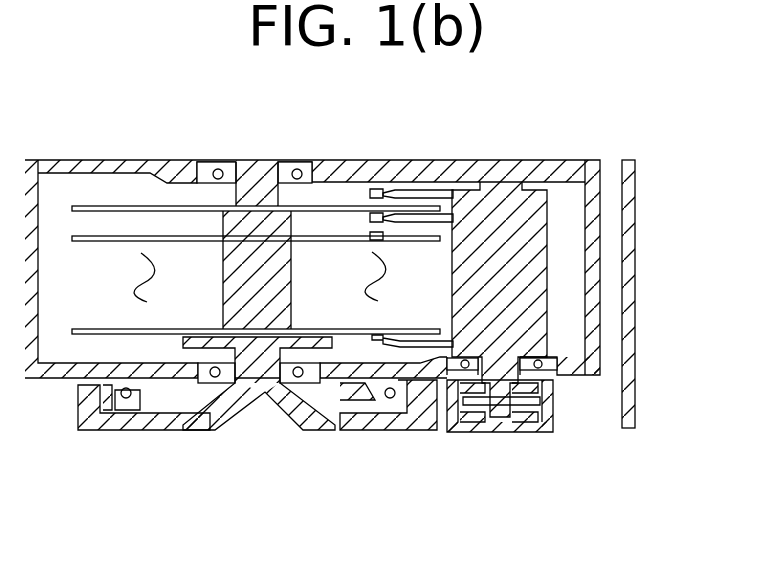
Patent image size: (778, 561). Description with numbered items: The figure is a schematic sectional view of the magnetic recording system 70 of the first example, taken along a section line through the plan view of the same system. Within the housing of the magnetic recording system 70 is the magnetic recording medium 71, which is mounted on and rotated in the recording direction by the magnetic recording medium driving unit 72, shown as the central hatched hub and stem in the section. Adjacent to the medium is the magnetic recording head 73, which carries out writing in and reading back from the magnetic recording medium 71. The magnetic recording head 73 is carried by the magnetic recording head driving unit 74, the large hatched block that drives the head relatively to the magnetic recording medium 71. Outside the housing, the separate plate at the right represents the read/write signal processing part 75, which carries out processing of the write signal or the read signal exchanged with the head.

The magnetic recording system 70 is at (131, 501).
The magnetic recording medium 71 is at (113, 206).
The magnetic recording medium driving unit 72 is at (253, 348).
The magnetic recording head 73 is at (375, 190).
The magnetic recording head driving unit 74 is at (500, 192).
The read/write signal processing part 75 is at (622, 380).